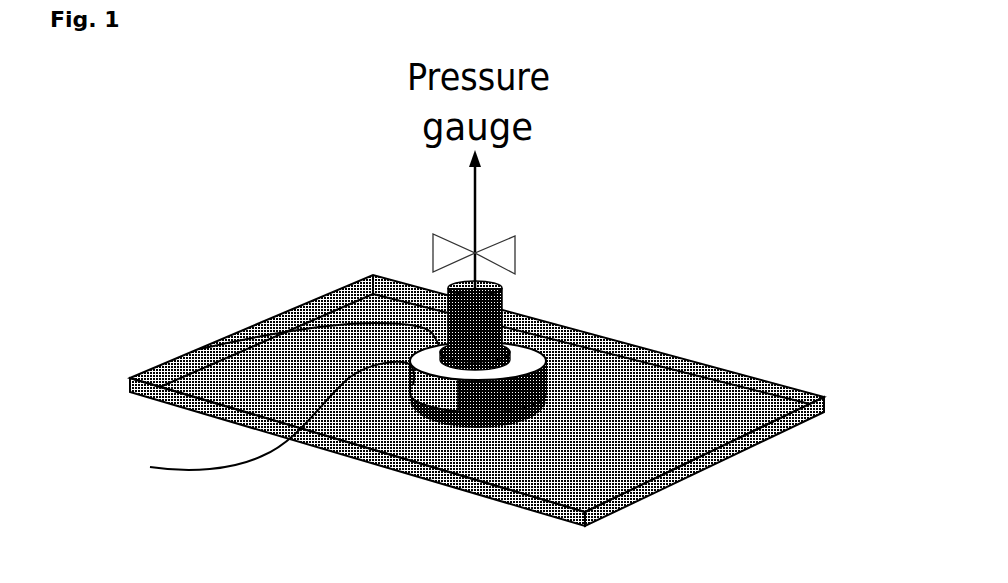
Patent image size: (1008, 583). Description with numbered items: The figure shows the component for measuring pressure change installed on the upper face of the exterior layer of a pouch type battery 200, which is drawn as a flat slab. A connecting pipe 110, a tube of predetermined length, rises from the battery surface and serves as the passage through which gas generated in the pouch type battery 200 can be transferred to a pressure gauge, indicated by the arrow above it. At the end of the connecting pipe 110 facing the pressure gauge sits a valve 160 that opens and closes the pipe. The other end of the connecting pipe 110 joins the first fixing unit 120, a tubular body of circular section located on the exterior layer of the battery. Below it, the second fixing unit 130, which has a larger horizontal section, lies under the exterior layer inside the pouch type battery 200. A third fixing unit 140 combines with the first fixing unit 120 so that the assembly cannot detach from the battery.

The connecting pipe 110 is at (372, 278).
The first fixing unit 120 is at (200, 349).
The second fixing unit 130 is at (458, 408).
The third fixing unit 140 is at (253, 424).
The valve 160 is at (512, 232).
The pouch type battery 200 is at (691, 372).